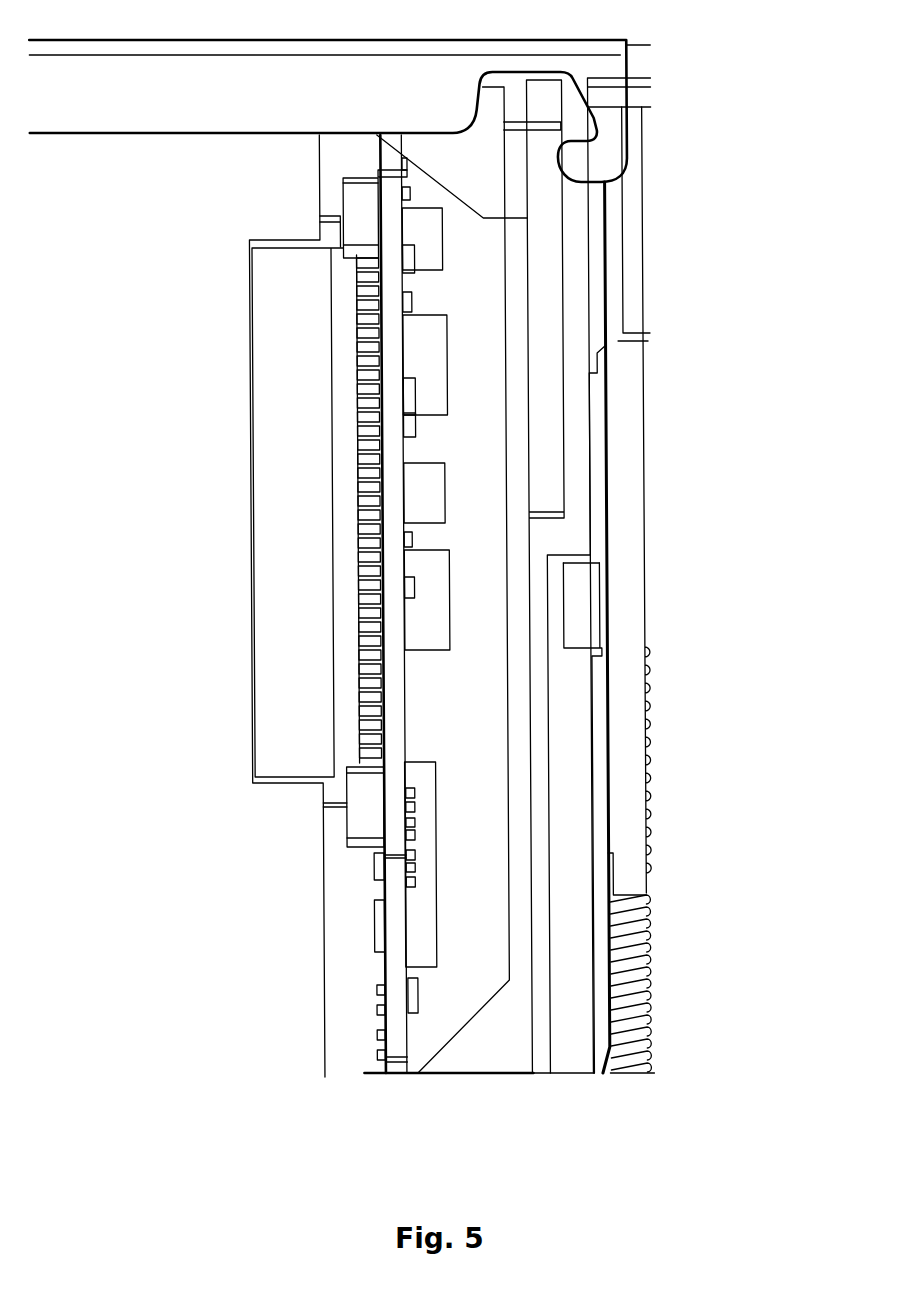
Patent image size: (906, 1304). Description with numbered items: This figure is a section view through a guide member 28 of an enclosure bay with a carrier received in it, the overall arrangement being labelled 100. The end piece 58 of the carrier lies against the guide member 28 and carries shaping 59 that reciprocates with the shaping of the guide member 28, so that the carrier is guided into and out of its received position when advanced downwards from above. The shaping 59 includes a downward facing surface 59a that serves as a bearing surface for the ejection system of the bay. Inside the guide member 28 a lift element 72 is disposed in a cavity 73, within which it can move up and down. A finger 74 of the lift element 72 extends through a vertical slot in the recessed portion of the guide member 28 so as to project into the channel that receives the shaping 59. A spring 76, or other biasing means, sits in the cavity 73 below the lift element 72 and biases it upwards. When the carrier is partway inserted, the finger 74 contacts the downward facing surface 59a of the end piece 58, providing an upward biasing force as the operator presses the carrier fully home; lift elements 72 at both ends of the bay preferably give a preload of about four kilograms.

The guide member 28 is at (618, 212).
The end piece 58 is at (462, 993).
The shaping 59 is at (570, 540).
The downward facing surface 59a is at (585, 567).
The lift element 72 is at (632, 623).
The finger 74 is at (582, 612).
The spring 76 is at (625, 963).
The cavity 73 is at (680, 1020).
The module assembly 100 is at (200, 943).